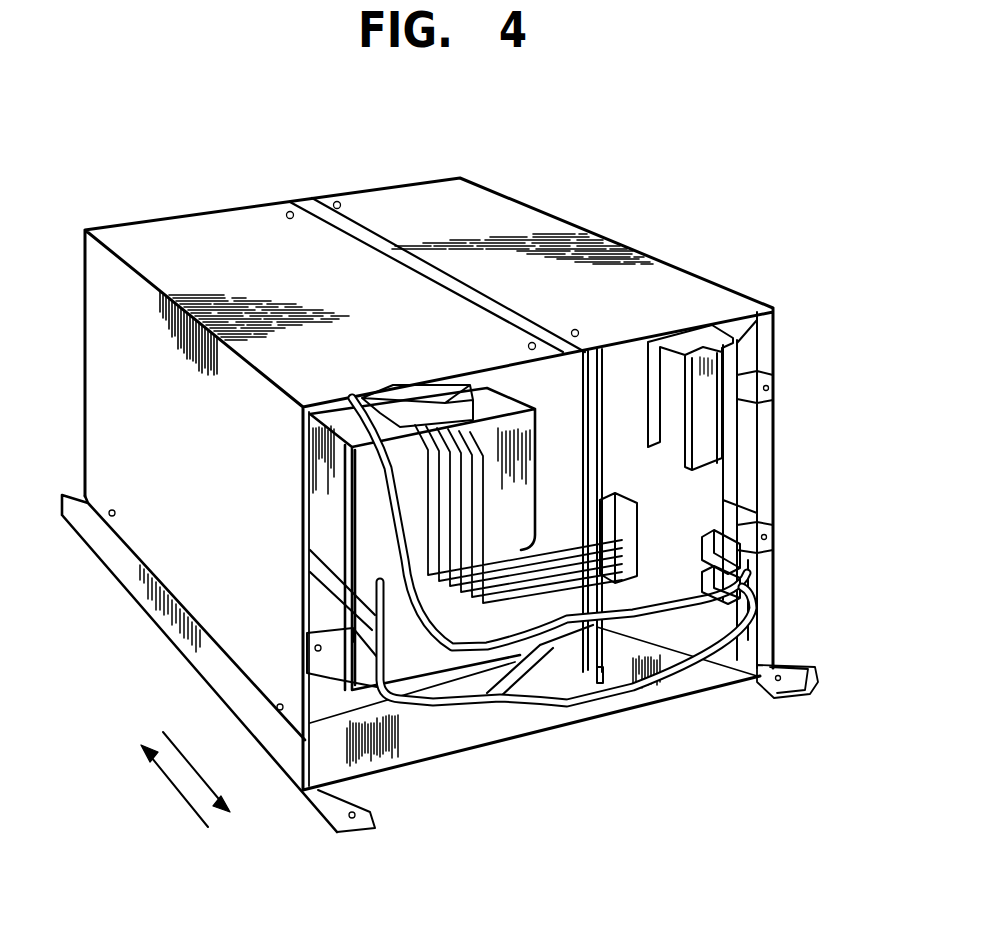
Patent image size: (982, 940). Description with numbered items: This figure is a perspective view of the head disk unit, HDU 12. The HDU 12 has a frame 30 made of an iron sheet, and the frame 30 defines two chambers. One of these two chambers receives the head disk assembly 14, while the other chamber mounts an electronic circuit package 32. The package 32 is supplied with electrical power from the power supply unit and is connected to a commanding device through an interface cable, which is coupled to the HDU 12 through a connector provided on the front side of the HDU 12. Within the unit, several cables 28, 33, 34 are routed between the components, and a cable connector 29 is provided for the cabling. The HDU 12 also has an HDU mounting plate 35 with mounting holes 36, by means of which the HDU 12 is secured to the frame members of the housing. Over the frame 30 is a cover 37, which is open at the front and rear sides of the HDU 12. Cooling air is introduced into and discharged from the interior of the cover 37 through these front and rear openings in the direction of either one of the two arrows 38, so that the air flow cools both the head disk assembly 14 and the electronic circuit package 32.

The HDU 12 is at (465, 162).
The head disk assembly 14 is at (360, 538).
The cable 28 is at (668, 615).
The cable connector 29 is at (396, 386).
The frame 30 is at (467, 740).
The electronic circuit package 32 is at (605, 382).
The cable 33 is at (513, 703).
The cable 34 is at (543, 645).
The HDU mounting plate 35 is at (352, 835).
The mounting holes 36 is at (375, 818).
The cover 37 is at (157, 228).
The arrows 38 is at (208, 784).